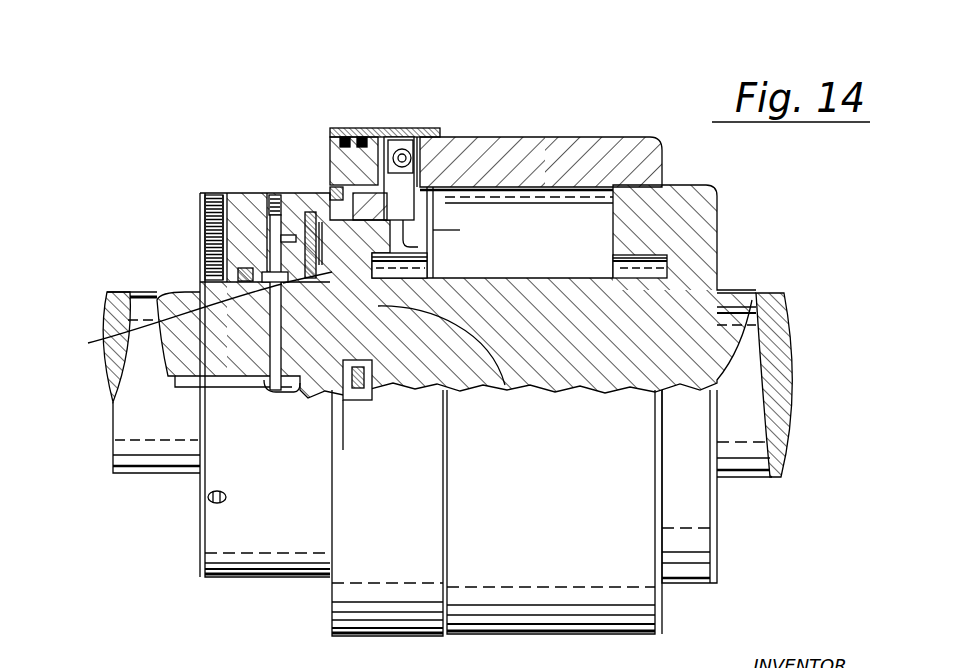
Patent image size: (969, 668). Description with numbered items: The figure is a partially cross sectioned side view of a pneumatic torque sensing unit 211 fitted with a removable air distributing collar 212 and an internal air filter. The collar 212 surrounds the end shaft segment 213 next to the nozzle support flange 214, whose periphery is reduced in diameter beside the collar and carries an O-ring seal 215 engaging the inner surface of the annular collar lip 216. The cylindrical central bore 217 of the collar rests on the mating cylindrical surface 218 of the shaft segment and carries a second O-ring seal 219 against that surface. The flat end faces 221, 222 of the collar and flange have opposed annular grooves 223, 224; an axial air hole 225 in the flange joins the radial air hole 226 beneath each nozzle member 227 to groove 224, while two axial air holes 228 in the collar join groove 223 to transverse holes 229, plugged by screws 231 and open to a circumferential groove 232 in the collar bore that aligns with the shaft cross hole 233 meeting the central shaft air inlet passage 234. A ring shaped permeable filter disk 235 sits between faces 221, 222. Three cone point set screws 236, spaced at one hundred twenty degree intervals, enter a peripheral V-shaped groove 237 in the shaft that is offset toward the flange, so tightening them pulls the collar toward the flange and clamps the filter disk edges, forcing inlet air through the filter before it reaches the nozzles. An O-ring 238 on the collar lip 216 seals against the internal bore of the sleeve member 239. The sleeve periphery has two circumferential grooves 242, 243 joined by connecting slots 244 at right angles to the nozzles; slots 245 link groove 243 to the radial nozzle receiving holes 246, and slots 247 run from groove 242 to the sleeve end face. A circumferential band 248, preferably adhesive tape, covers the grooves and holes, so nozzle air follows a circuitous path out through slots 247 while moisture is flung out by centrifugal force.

The torque sensing unit 211 is at (590, 132).
The air distributing collar 212 is at (198, 255).
The end shaft segment 213 is at (108, 333).
The nozzle support flange 214 is at (488, 140).
The O-ring seal 215 is at (410, 216).
The annular collar lip 216 is at (312, 212).
The cylindrical central bore 217 is at (378, 388).
The cylindrical surface 218 is at (196, 282).
The O-ring seal 219 is at (323, 281).
The flat end face 221 is at (404, 348).
The flat end face 222 is at (300, 217).
The annular groove 223 is at (295, 205).
The annular groove 224 is at (430, 267).
The axial air hole 225 is at (405, 245).
The radial air hole 226 is at (408, 229).
The nozzle member 227 is at (372, 198).
The axial air hole 228 is at (305, 390).
The transverse hole 229 is at (243, 203).
The screw 231 is at (263, 217).
The circumferential groove 232 is at (283, 275).
The shaft cross hole 233 is at (258, 392).
The central shaft air inlet passage 234 is at (213, 390).
The permeable filter disk 235 is at (507, 388).
The cone point set screw 236 is at (210, 190).
The V-shaped groove 237 is at (183, 315).
The O-ring 238 is at (330, 187).
The sleeve member 239 is at (637, 148).
The circumferential groove 242 is at (347, 133).
The circumferential groove 243 is at (363, 130).
The connecting slot 244 is at (352, 394).
The slot 245 is at (370, 130).
The radial nozzle receiving hole 246 is at (423, 127).
The slot 247 is at (333, 137).
The circumferential band 248 is at (430, 128).